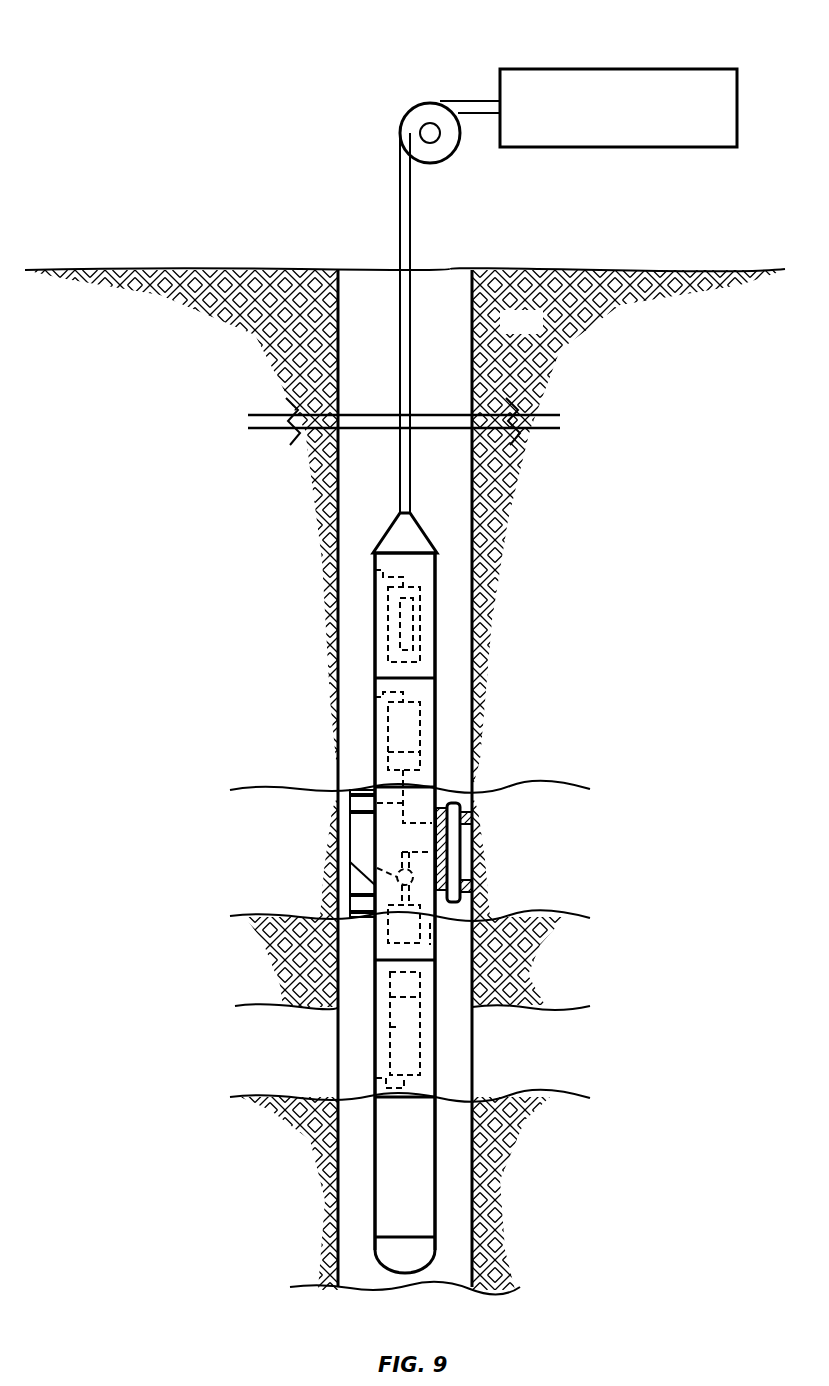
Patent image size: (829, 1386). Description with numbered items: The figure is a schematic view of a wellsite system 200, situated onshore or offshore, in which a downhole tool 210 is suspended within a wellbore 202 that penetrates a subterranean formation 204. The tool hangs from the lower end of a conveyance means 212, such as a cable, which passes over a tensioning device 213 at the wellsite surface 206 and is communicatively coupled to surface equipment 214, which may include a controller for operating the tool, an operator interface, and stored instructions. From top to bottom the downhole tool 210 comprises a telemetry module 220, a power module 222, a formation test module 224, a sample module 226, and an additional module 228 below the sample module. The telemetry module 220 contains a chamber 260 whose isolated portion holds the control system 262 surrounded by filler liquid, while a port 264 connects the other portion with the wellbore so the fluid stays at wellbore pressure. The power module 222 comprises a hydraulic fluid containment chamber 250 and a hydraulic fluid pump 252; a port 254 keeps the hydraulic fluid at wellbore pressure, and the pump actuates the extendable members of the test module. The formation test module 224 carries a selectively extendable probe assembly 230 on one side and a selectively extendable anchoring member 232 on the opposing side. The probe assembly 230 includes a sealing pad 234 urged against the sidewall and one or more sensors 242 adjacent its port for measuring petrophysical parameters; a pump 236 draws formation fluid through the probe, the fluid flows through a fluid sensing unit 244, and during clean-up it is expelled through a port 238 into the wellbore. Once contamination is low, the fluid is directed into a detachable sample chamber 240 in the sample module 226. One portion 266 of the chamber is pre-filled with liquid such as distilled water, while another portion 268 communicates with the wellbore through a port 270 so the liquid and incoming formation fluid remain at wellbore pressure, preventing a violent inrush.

The wellsite system 200 is at (196, 90).
The wellbore 202 is at (388, 487).
The subterranean formation 204 is at (542, 332).
The wellsite surface 206 is at (172, 268).
The downhole tool 210 is at (434, 522).
The conveyance means 212 is at (397, 208).
The tensioning device 213 is at (404, 110).
The surface equipment 214 is at (617, 70).
The telemetry module 220 is at (375, 607).
The power module 222 is at (375, 740).
The formation test module 224 is at (436, 797).
The sample module 226 is at (440, 1022).
The module 228 is at (375, 1187).
The probe assembly 230 is at (472, 860).
The anchoring member 232 is at (348, 877).
The sealing pad 234 is at (470, 880).
The pump 236 is at (388, 928).
The port 238 is at (430, 945).
The sample chamber 240 is at (390, 1060).
The sensors 242 is at (470, 820).
The fluid sensing unit 244 is at (372, 882).
The hydraulic fluid containment chamber 250 is at (420, 717).
The hydraulic fluid pump 252 is at (420, 760).
The port 254 is at (375, 697).
The chamber 260 is at (420, 605).
The control system 262 is at (413, 640).
The port 264 is at (375, 570).
The portion 266 is at (395, 990).
The portion 268 is at (400, 1027).
The port 270 is at (380, 1082).